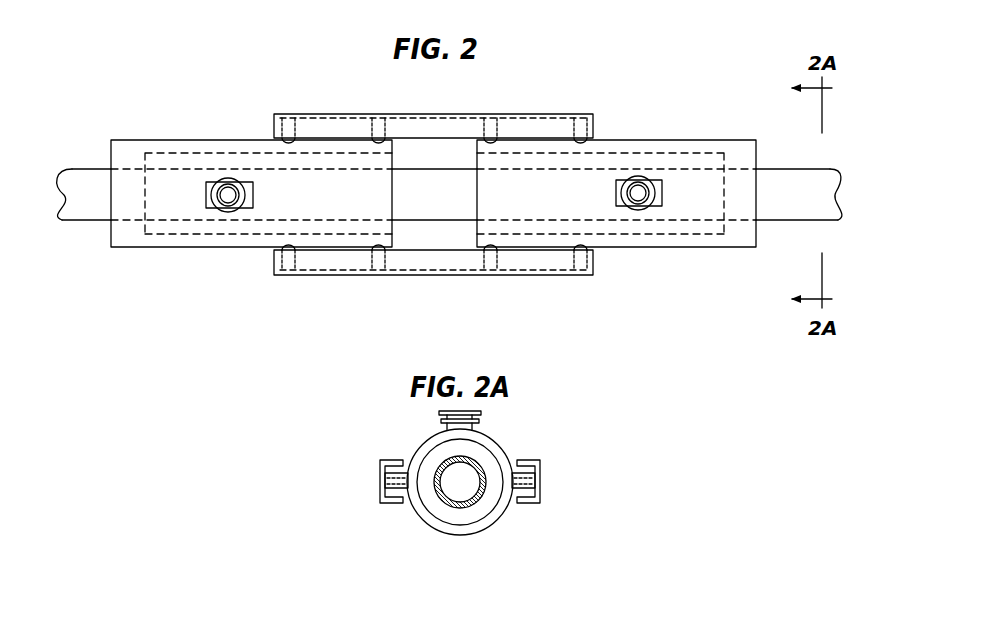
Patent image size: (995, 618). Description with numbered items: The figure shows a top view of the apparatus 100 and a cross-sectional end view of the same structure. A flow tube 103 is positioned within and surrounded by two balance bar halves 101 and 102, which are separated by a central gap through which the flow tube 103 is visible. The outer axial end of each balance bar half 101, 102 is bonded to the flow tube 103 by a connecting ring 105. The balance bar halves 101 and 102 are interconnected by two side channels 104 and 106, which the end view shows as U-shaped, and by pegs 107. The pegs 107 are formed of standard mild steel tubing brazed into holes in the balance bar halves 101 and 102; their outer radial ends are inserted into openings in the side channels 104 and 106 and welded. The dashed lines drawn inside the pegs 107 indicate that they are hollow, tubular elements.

In FIG. 2, the pipe coupling assembly 100 is at (138, 96).
In FIG. 2, the balance bar half 101 is at (148, 246).
In FIG. 2, the balance bar half 102 is at (706, 241).
In FIG. 2A, the balance bar half 102 is at (505, 452).
In FIG. 2, the flow tube 103 is at (80, 206).
In FIG. 2A, the flow tube 103 is at (465, 506).
In FIG. 2, the side channel 104 is at (500, 276).
In FIG. 2A, the side channel 104 is at (378, 466).
In FIG. 2, the connecting ring 105 is at (128, 202).
In FIG. 2A, the connecting ring 105 is at (483, 510).
In FIG. 2, the side channel 106 is at (512, 114).
In FIG. 2A, the side channel 106 is at (542, 466).
In FIG. 2, the pegs 107 is at (283, 137).
In FIG. 2A, the pegs 107 is at (412, 506).